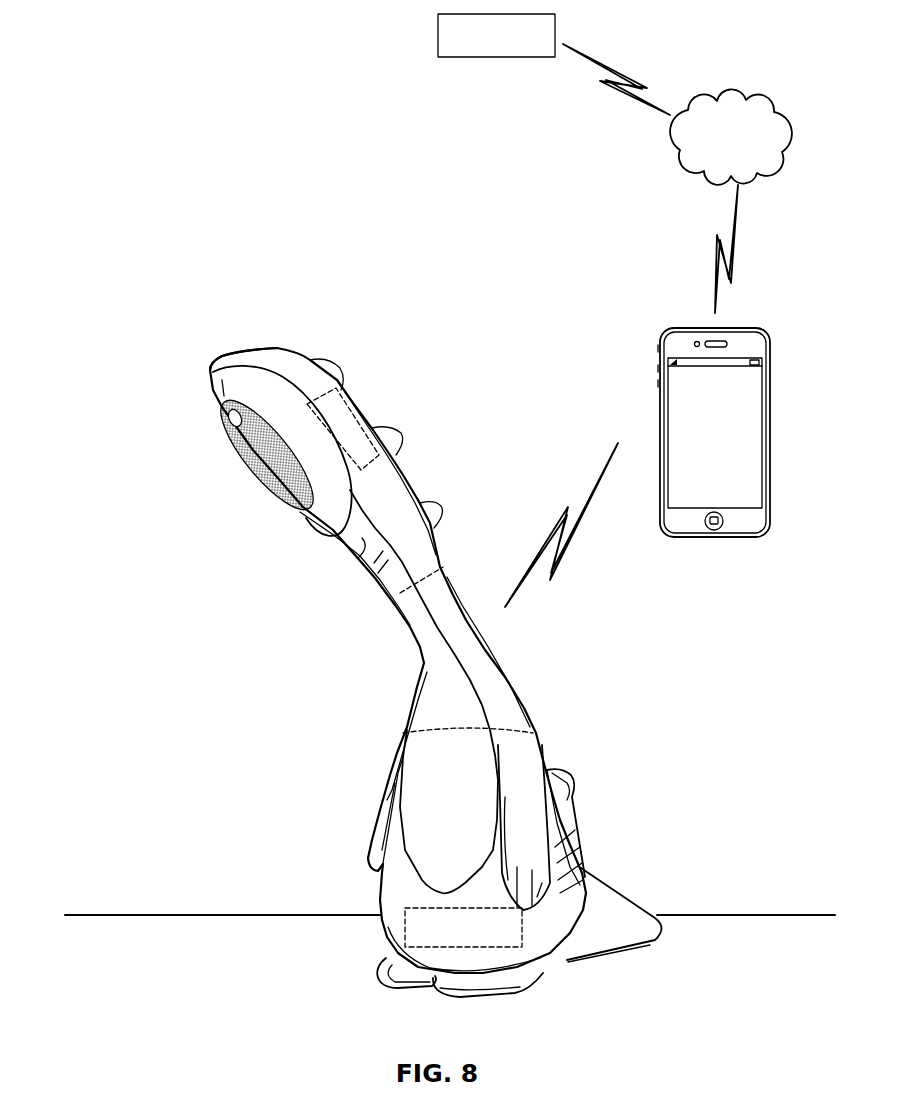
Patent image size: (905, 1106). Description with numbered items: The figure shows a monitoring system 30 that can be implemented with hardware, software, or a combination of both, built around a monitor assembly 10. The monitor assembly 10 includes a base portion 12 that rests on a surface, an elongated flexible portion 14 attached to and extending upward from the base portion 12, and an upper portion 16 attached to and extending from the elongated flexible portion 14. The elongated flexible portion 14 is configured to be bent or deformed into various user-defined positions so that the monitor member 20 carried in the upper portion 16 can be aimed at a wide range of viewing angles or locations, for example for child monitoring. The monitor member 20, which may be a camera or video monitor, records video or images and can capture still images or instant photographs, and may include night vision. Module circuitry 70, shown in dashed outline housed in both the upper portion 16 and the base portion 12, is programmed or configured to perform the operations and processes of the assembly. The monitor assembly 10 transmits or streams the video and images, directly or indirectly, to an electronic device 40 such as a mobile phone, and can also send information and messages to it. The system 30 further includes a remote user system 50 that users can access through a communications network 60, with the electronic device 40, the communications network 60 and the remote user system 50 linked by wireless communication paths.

The monitor assembly 10 is at (208, 646).
The base portion 12 is at (380, 818).
The elongated flexible portion 14 is at (425, 662).
The upper portion 16 is at (280, 362).
The monitor member 20 is at (228, 422).
The monitoring system 30 is at (104, 298).
The electronic device 40 is at (716, 594).
The remote user system 50 is at (482, 49).
The communications network 60 is at (716, 149).
The module circuitry 70 is at (362, 437).